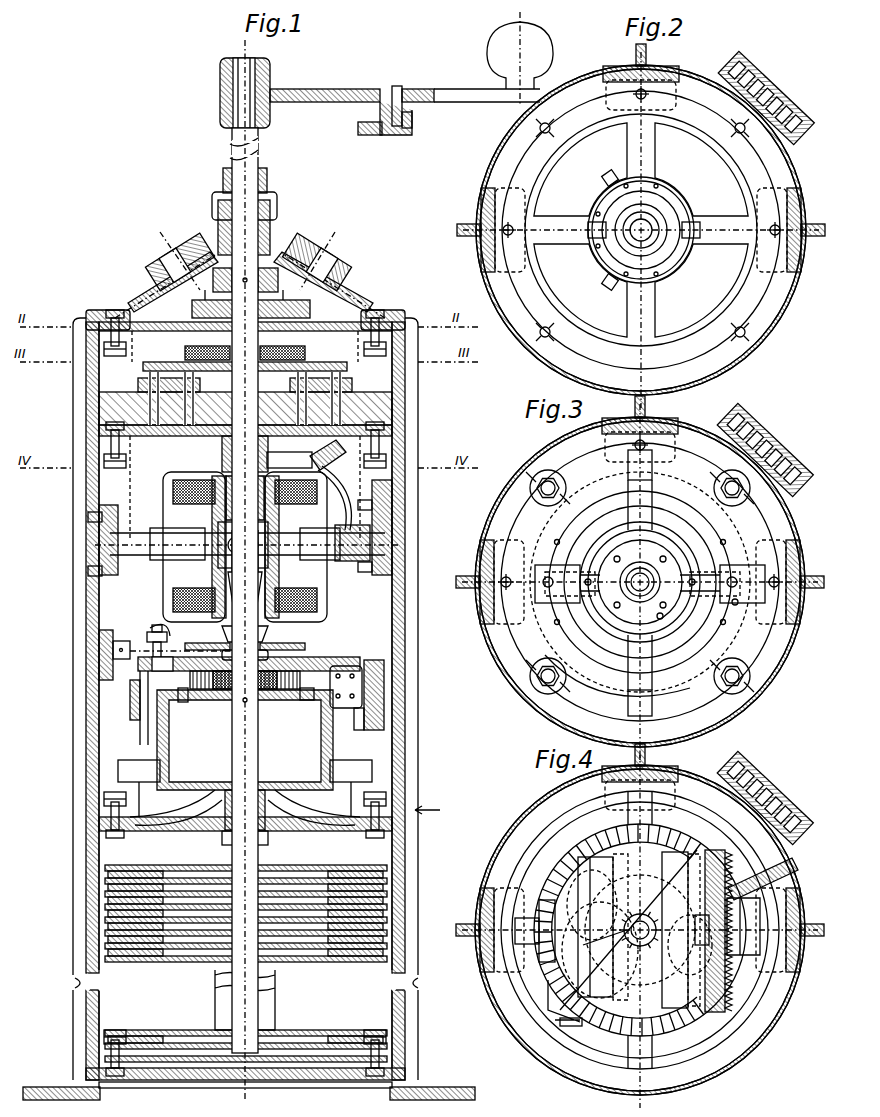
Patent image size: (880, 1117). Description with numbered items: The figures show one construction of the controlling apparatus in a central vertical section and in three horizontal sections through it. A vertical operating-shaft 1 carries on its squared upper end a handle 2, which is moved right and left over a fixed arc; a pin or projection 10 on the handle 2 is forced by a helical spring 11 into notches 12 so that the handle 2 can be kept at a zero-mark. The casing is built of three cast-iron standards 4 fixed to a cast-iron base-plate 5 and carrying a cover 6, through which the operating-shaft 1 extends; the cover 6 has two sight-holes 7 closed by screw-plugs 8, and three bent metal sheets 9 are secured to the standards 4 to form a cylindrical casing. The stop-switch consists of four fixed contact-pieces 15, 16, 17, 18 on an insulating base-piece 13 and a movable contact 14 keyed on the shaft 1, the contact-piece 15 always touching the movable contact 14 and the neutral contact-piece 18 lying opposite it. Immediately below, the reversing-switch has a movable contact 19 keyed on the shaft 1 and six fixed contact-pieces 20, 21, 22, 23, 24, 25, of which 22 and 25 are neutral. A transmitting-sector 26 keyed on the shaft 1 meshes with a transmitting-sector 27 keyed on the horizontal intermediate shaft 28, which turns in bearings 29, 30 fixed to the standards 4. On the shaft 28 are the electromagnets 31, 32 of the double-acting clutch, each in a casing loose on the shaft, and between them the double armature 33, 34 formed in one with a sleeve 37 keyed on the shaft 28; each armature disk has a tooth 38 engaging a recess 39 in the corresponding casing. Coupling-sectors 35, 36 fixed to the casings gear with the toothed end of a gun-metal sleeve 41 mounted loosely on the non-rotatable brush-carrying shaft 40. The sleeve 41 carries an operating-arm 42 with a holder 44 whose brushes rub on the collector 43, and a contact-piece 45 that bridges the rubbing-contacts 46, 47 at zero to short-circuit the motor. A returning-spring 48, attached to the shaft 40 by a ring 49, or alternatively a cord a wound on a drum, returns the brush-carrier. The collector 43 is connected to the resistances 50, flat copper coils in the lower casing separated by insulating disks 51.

In FIG. 1, the operating-shaft 1 is at (245, 570).
In FIG. 1, the handle 2 is at (411, 58).
In FIG. 1, the cast-iron standards 4 is at (97, 642).
In FIG. 2, the cast-iron standards 4 is at (632, 62).
In FIG. 3, the cast-iron standards 4 is at (654, 416).
In FIG. 4, the cast-iron standards 4 is at (666, 770).
In FIG. 1, the cast-iron base-plate 5 is at (55, 1100).
In FIG. 1, the cover 6 is at (134, 302).
In FIG. 1, the sight-holes 7 is at (184, 250).
In FIG. 1, the screw-plugs 8 is at (162, 270).
In FIG. 1, the bent metal sheets 9 is at (245, 699).
In FIG. 2, the bent metal sheets 9 is at (500, 142).
In FIG. 3, the bent metal sheets 9 is at (524, 478).
In FIG. 4, the bent metal sheets 9 is at (516, 828).
In FIG. 1, the pin or projection 10 is at (404, 92).
In FIG. 1, the helical spring 11 is at (393, 92).
In FIG. 1, the notches 12 is at (412, 129).
In FIG. 1, the base-piece 13 is at (306, 309).
In FIG. 1, the movable contact 14 is at (252, 284).
In FIG. 2, the movable contact 14 is at (598, 246).
In FIG. 2, the contact-piece 15 is at (678, 200).
In FIG. 2, the contact-piece 16 is at (612, 272).
In FIG. 2, the contact-piece 17 is at (616, 185).
In FIG. 2, the neutral contact-piece 18 is at (588, 230).
In FIG. 1, the movable contact 19 is at (310, 364).
In FIG. 3, the movable contact 19 is at (738, 572).
In FIG. 3, the fixed contact-piece 20 is at (640, 579).
In FIG. 3, the fixed contact-piece 21 is at (617, 672).
In FIG. 3, the neutral contact-piece 22 is at (542, 566).
In FIG. 3, the fixed contact-piece 23 is at (638, 582).
In FIG. 3, the fixed contact-piece 24 is at (664, 620).
In FIG. 3, the neutral contact-piece 25 is at (744, 609).
In FIG. 1, the transmitting-sector 26 is at (306, 455).
In FIG. 4, the transmitting-sector 26 is at (708, 930).
In FIG. 1, the transmitting-sector 27 is at (341, 498).
In FIG. 4, the transmitting-sector 27 is at (637, 930).
In FIG. 1, the horizontal intermediate shaft 28 is at (247, 545).
In FIG. 1, the bearing 29 is at (112, 506).
In FIG. 1, the bearing 30 is at (375, 522).
In FIG. 1, the electromagnet 31 is at (330, 598).
In FIG. 4, the electromagnet 31 is at (681, 930).
In FIG. 1, the electromagnet 32 is at (164, 598).
In FIG. 4, the electromagnet 32 is at (595, 927).
In FIG. 1, the armature disk 33 is at (243, 498).
In FIG. 4, the armature disk 33 is at (623, 927).
In FIG. 1, the armature disk 34 is at (245, 577).
In FIG. 4, the armature disk 34 is at (643, 916).
In FIG. 1, the coupling-sector 35 is at (284, 642).
In FIG. 1, the coupling-sector 36 is at (208, 643).
In FIG. 1, the sleeve 37 is at (248, 498).
In FIG. 4, the tooth 38 is at (639, 922).
In FIG. 4, the recess 39 is at (628, 936).
In FIG. 1, the brush-carrying shaft 40 is at (245, 688).
In FIG. 1, the gun-metal sleeve 41 is at (255, 651).
In FIG. 4, the gun-metal sleeve 41 is at (628, 930).
In FIG. 1, the operating-arm 42 is at (308, 656).
In FIG. 1, the collector 43 is at (245, 740).
In FIG. 4, the collector 43 is at (636, 998).
In FIG. 1, the holder 44 is at (140, 684).
In FIG. 4, the holder 44 is at (557, 1003).
In FIG. 1, the contact-piece 45 is at (342, 666).
In FIG. 4, the contact-piece 45 is at (728, 876).
In FIG. 1, the rubbing-contact 46 is at (372, 686).
In FIG. 4, the rubbing-contact 46 is at (794, 866).
In FIG. 1, the rubbing-contact 47 is at (365, 717).
In FIG. 1, the returning-spring 48 is at (306, 700).
In FIG. 1, the ring 49 is at (272, 702).
In FIG. 1, the resistances 50 is at (338, 880).
In FIG. 1, the disks 51 is at (178, 880).
In FIG. 1, the cord a is at (149, 631).